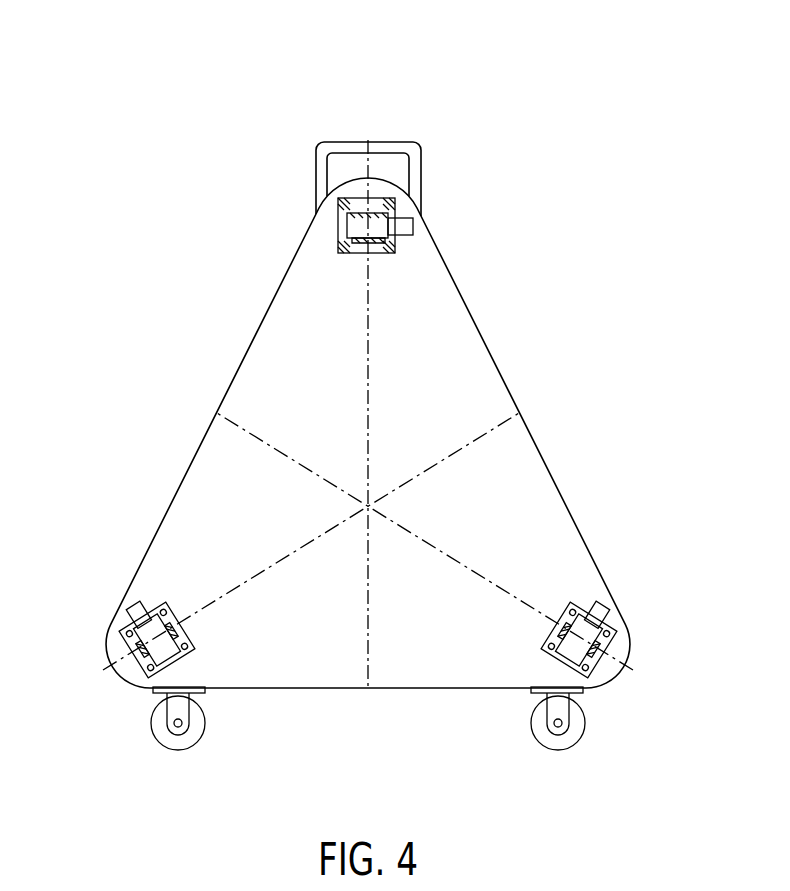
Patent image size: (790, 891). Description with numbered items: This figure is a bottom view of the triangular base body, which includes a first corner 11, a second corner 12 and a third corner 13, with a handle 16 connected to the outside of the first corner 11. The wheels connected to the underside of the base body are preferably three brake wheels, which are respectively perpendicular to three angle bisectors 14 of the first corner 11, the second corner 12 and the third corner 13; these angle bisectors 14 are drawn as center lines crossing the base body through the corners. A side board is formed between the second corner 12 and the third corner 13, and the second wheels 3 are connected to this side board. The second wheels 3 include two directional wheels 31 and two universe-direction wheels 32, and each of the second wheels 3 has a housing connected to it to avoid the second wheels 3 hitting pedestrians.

The second wheels 3 is at (150, 718).
The first corner 11 is at (350, 188).
The second corner 12 is at (118, 652).
The third corner 13 is at (627, 660).
The angle bisectors 14 is at (260, 433).
The handle 16 is at (371, 140).
The directional wheels 31 is at (157, 736).
The universe-direction wheels 32 is at (588, 721).